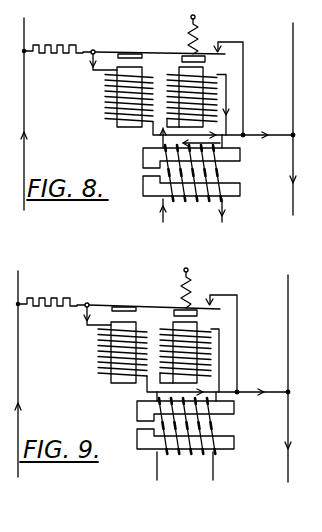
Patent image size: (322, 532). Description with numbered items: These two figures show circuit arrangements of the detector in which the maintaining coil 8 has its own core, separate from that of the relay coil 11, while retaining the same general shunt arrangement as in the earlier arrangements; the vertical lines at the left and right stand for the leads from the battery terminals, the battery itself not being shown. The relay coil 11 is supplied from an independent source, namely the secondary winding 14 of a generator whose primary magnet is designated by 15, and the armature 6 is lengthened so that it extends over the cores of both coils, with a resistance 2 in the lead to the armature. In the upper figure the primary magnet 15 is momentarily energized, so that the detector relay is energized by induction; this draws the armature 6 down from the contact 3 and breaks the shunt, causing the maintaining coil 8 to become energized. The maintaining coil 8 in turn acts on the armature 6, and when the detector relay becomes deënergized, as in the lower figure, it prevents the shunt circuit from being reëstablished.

In FIG. 8, the resistance 2 is at (57, 63).
In FIG. 9, the resistance 2 is at (51, 316).
In FIG. 8, the contact 3 is at (228, 76).
In FIG. 9, the contact 3 is at (221, 331).
In FIG. 8, the armature 6 is at (160, 50).
In FIG. 9, the armature 6 is at (154, 303).
In FIG. 8, the maintaining coil 8 is at (120, 97).
In FIG. 9, the maintaining coil 8 is at (113, 352).
In FIG. 8, the relay coil 11 is at (205, 97).
In FIG. 9, the relay coil 11 is at (214, 357).
In FIG. 8, the secondary winding 14 is at (206, 173).
In FIG. 9, the secondary winding 14 is at (199, 426).
In FIG. 8, the primary magnet 15 is at (213, 206).
In FIG. 9, the primary magnet 15 is at (185, 454).